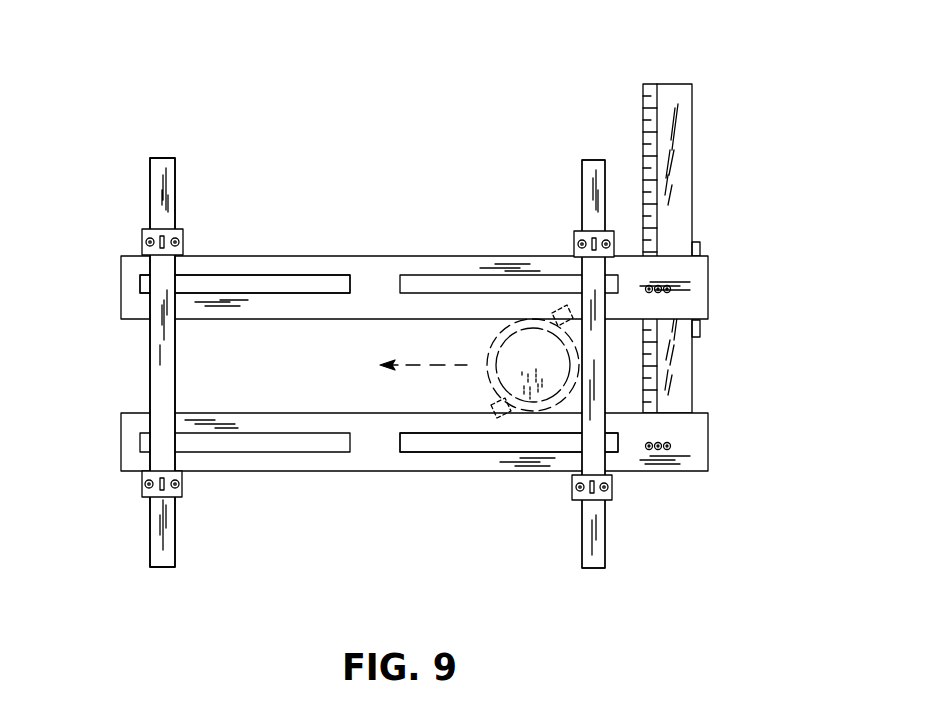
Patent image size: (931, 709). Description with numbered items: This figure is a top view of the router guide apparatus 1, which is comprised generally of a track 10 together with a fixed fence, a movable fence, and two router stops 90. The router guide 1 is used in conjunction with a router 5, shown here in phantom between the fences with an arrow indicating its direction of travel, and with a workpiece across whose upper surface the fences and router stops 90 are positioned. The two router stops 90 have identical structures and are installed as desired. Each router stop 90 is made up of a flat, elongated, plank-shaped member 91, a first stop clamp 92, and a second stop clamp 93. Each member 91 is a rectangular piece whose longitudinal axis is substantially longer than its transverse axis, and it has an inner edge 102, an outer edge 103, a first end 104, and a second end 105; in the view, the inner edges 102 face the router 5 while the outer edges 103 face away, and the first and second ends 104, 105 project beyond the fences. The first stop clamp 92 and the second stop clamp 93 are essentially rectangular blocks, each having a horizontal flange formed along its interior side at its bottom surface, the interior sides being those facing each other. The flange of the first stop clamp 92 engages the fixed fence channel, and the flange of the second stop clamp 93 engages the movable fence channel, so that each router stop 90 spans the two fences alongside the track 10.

The router guide apparatus 1 is at (333, 103).
The router 5 is at (540, 359).
The track 10 is at (684, 100).
The router stop 90 is at (160, 158).
The plank-shaped member 91 is at (157, 386).
The first stop clamp 92 is at (142, 484).
The second stop clamp 93 is at (183, 232).
The inner edge 102 is at (176, 352).
The outer edge 103 is at (150, 365).
The first end 104 is at (160, 567).
The second end 105 is at (590, 160).